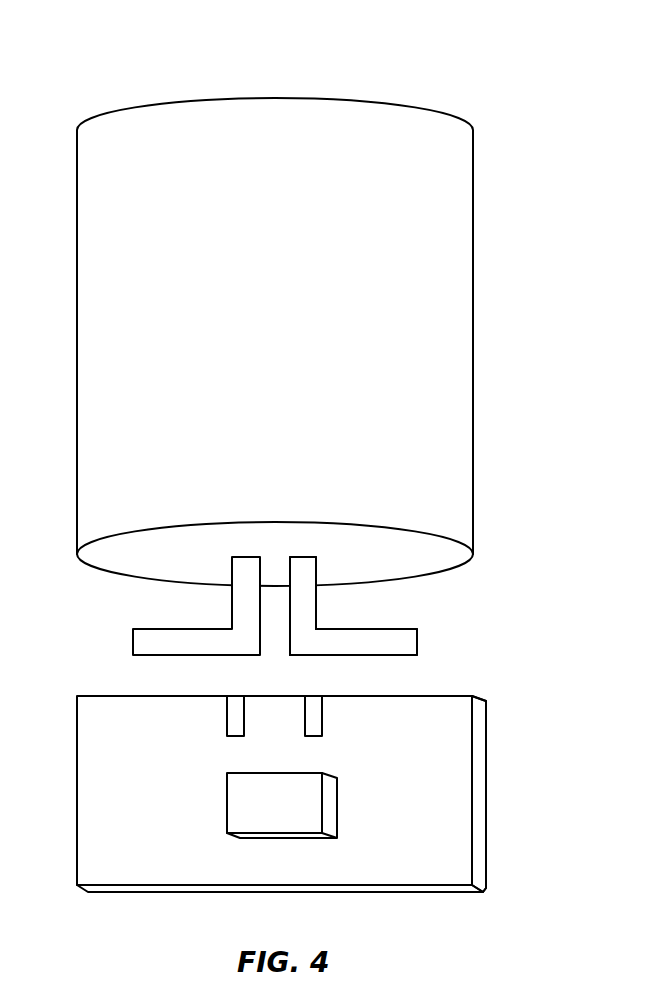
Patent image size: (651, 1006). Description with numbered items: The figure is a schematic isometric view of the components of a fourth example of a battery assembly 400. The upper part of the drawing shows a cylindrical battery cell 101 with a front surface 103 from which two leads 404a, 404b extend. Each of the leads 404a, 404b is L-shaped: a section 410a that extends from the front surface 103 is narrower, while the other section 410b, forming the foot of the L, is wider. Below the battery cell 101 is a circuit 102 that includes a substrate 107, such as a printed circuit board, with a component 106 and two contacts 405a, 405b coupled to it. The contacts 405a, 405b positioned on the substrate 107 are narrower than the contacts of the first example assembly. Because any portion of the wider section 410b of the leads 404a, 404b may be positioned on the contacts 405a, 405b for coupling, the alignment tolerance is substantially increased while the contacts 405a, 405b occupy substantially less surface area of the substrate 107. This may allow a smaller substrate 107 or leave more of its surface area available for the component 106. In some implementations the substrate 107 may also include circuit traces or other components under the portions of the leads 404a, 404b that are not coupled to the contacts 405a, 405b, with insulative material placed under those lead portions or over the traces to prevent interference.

The battery assembly 400 is at (483, 67).
The battery cell 101 is at (473, 333).
The front surface 103 is at (450, 557).
The lead 404a is at (150, 629).
The lead 404b is at (400, 629).
The section 410a is at (317, 600).
The section 410b is at (417, 640).
The contact 405a is at (232, 704).
The contact 405b is at (318, 704).
The circuit 102 is at (485, 873).
The substrate 107 is at (478, 777).
The component 106 is at (278, 833).